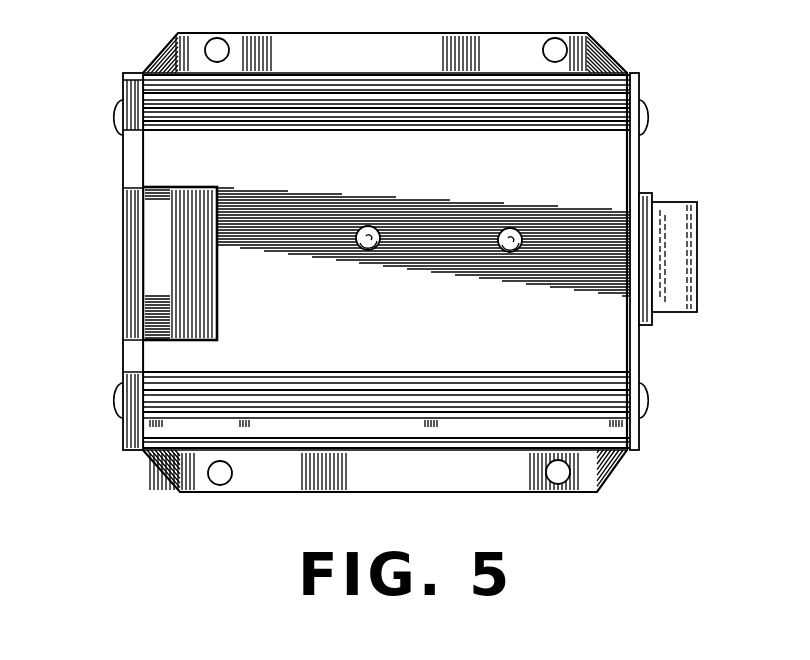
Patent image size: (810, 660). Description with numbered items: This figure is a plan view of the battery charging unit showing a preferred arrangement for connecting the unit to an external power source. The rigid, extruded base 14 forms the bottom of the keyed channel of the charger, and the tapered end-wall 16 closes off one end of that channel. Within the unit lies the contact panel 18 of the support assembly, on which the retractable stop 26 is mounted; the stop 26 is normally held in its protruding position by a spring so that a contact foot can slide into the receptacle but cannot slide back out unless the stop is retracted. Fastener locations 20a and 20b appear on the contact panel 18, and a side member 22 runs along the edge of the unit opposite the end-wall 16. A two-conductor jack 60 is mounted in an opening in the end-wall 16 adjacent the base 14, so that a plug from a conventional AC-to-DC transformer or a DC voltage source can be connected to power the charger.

The base 14 is at (450, 470).
The end-wall 16 is at (640, 143).
The contact panel 18 is at (432, 345).
The fastener hole 20a is at (367, 227).
The fastener hole 20b is at (503, 229).
The left side bracket 22 is at (123, 160).
The retractable stop 26 is at (219, 288).
The jack 60 is at (683, 297).